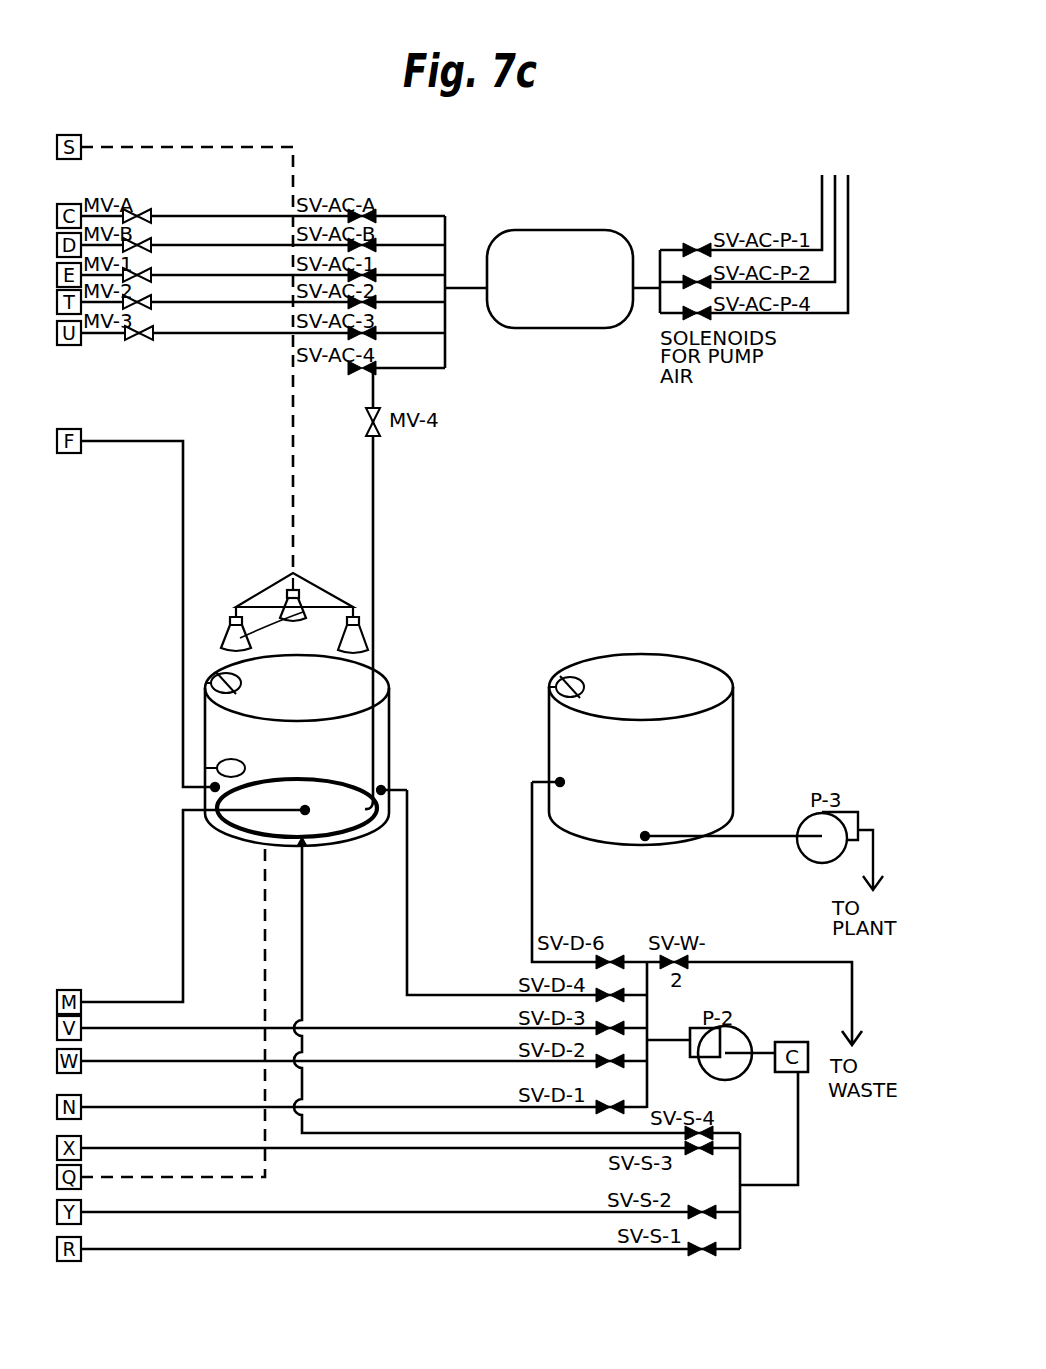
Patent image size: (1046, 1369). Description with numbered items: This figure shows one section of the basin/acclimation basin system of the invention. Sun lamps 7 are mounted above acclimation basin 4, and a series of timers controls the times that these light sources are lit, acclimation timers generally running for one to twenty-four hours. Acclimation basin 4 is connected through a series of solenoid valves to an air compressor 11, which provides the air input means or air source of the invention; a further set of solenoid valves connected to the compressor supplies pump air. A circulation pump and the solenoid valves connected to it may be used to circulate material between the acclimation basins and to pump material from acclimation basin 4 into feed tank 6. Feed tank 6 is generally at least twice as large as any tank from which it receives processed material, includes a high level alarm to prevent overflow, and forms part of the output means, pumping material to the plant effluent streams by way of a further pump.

The air compressor 11 is at (626, 224).
The sun lamps 7 is at (279, 622).
The acclimation basin 4 is at (297, 750).
The feed tank 6 is at (641, 749).